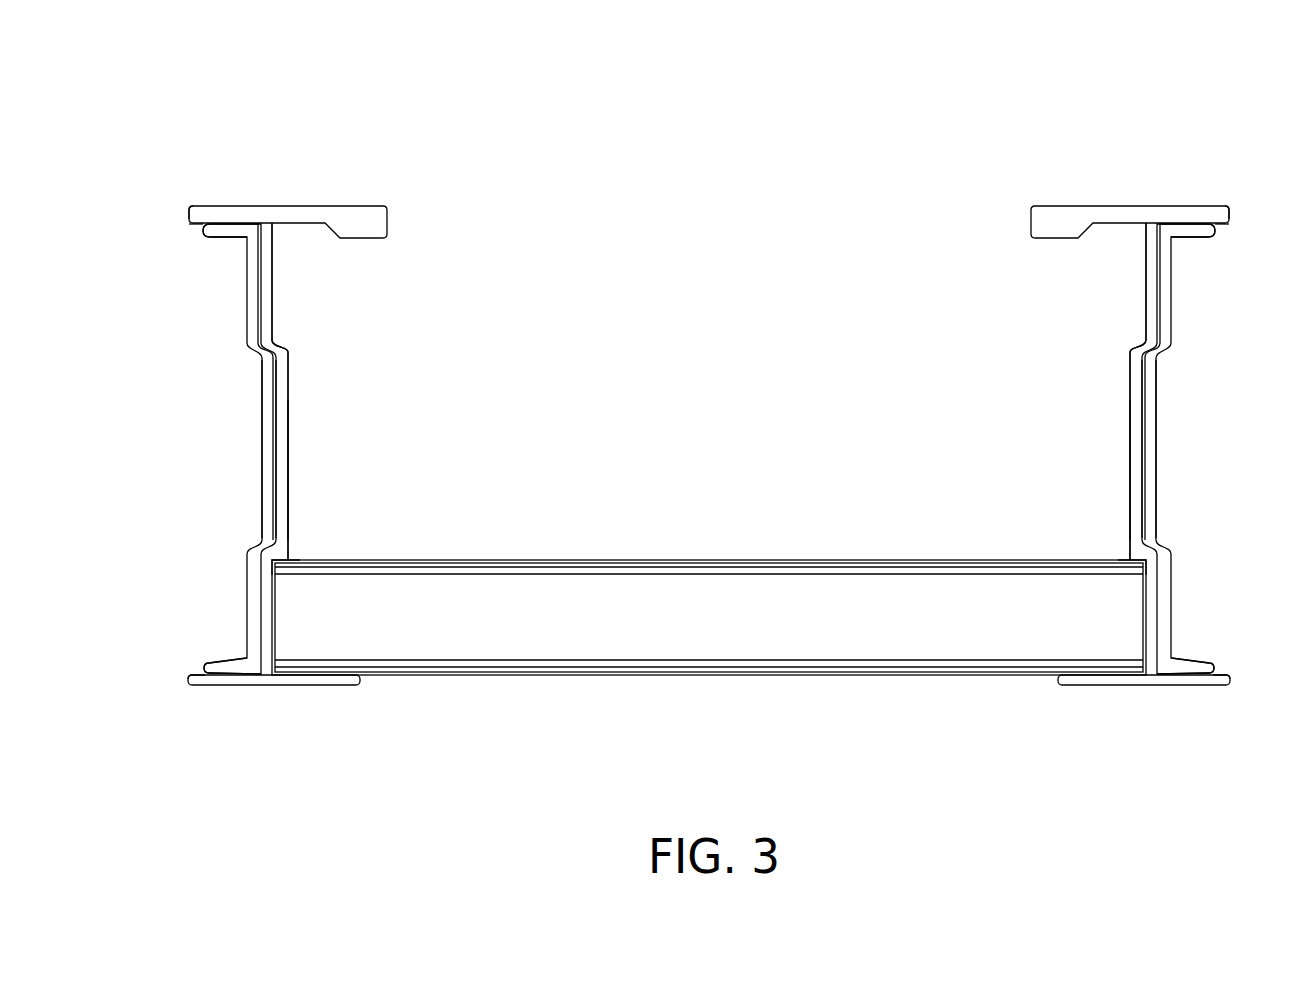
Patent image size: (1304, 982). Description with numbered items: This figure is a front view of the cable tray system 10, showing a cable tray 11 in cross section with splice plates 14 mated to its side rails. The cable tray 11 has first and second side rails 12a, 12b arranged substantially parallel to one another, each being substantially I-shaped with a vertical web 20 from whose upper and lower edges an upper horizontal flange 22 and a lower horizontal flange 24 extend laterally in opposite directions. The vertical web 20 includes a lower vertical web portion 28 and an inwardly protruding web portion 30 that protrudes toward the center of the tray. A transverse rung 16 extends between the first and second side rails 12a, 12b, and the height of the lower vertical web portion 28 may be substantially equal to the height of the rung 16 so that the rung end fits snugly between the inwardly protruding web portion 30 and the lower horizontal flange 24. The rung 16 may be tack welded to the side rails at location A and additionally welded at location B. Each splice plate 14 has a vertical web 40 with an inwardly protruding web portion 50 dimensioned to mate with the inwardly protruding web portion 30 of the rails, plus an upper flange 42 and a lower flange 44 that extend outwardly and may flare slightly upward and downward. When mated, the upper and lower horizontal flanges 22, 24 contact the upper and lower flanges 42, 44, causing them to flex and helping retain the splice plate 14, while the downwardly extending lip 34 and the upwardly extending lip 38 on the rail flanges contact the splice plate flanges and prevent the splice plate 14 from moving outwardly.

The cable tray system 10 is at (719, 40).
The cable tray 11 is at (379, 172).
The first side rail 12a is at (250, 206).
The second side rail 12b is at (1157, 206).
The splice plate 14 is at (245, 568).
The transverse rung 16 is at (687, 675).
The vertical web 20 is at (288, 373).
The upper horizontal flange 22 is at (318, 206).
The lower horizontal flange 24 is at (305, 686).
The lower vertical web portion 28 is at (272, 597).
The inwardly protruding web portion 30 is at (288, 470).
The downwardly extending lip 34 is at (200, 240).
The upwardly extending lip 38 is at (197, 668).
The vertical web 40 is at (262, 393).
The upper flange 42 is at (225, 239).
The lower flange 44 is at (232, 660).
The inwardly protruding web portion 50 is at (262, 452).
The location A is at (313, 675).
The location B is at (294, 560).